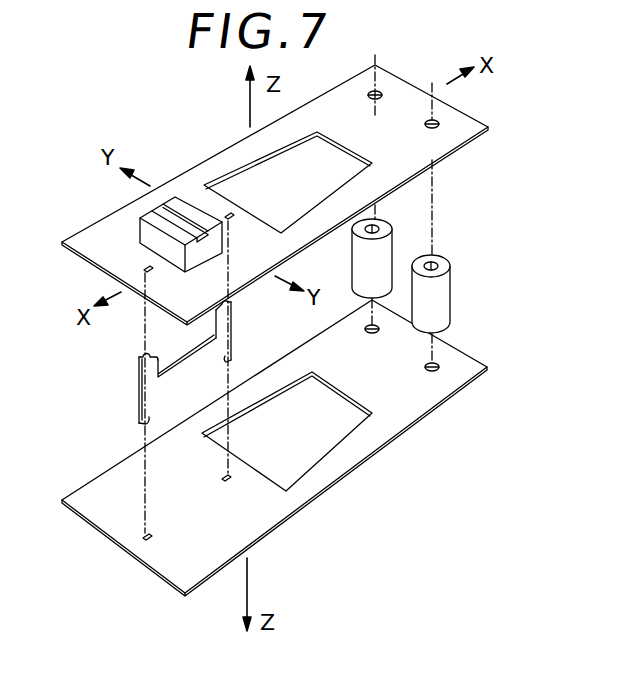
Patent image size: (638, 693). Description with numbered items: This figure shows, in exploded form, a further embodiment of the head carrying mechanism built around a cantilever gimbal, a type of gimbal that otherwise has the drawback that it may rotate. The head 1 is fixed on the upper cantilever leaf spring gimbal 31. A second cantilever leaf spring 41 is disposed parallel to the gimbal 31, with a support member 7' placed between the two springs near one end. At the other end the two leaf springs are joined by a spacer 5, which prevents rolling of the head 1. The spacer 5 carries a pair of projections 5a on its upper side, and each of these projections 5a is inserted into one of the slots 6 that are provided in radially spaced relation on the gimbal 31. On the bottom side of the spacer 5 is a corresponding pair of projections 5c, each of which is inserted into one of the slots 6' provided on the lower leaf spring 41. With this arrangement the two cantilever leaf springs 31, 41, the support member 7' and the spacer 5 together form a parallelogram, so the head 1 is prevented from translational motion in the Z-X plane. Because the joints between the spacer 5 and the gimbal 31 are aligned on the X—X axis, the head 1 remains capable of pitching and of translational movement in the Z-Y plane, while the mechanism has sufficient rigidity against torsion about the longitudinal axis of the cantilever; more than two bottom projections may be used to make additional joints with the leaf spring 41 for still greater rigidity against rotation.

The cantilever leaf spring gimbal 31 is at (215, 162).
The head 1 is at (147, 232).
The slot 6 is at (169, 237).
The spacer 5 is at (178, 374).
The projection 5a is at (232, 303).
The projection 5c is at (232, 360).
The cantilever leaf spring 41 is at (247, 532).
The slot 6' is at (216, 533).
The support member 7' is at (421, 275).